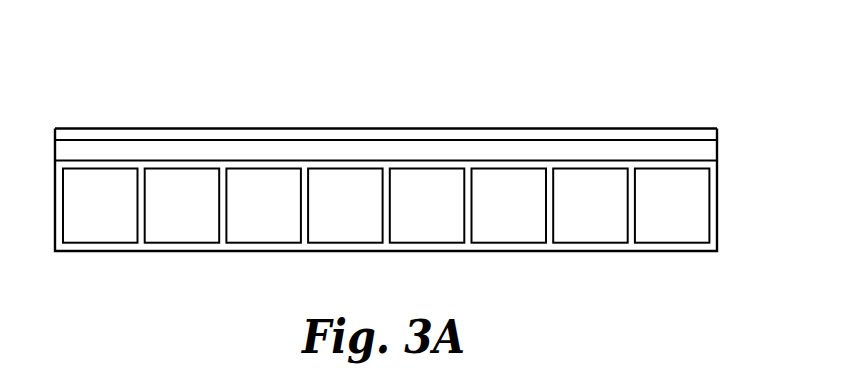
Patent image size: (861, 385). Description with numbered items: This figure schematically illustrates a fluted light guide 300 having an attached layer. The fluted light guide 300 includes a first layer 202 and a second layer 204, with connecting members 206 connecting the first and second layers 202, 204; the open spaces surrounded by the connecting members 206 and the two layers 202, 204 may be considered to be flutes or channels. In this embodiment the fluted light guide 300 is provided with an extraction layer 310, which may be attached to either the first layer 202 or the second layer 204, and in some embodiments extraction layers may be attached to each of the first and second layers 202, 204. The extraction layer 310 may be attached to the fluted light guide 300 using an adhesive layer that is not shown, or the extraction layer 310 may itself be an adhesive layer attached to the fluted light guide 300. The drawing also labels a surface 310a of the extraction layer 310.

The fluted light guide 300 is at (122, 62).
The first layer 202 is at (94, 168).
The second layer 204 is at (182, 252).
The connecting members 206 is at (380, 223).
The extraction layer 310 is at (719, 157).
The top surface of cover layer 310a is at (530, 126).